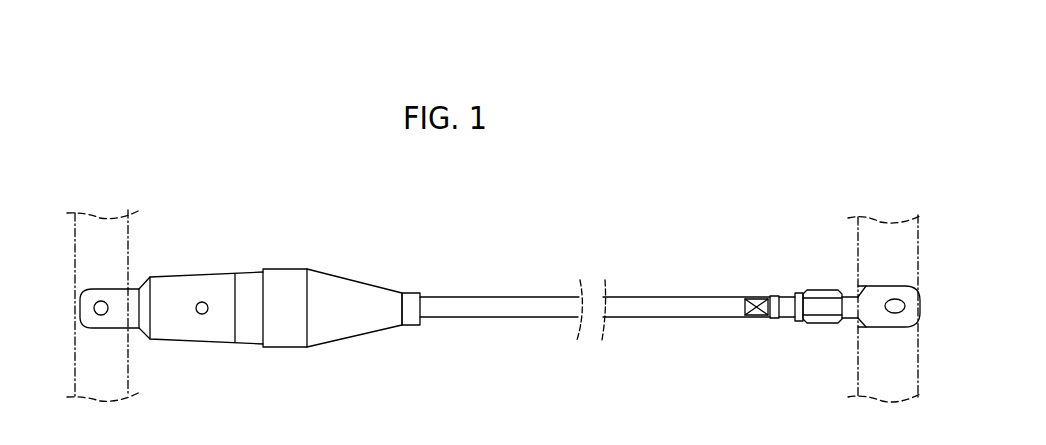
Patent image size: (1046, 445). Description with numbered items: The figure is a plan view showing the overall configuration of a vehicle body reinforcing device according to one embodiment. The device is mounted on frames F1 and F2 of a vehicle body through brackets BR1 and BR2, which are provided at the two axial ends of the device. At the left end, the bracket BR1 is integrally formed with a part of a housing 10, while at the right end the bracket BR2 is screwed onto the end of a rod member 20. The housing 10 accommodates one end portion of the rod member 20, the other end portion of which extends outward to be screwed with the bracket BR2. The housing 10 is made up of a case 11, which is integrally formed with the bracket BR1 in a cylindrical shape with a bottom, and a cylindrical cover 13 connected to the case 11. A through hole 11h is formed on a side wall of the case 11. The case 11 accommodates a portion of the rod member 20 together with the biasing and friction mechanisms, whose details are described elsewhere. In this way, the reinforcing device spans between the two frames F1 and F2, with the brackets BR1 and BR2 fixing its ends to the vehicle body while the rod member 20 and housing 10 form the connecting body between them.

The housing 10 is at (274, 305).
The case 11 is at (201, 332).
The through hole 11h is at (205, 315).
The cylindrical cover 13 is at (343, 329).
The rod member 20 is at (684, 292).
The bracket BR1 is at (115, 300).
The bracket BR2 is at (875, 299).
The frame F1 is at (128, 372).
The frame F2 is at (858, 378).